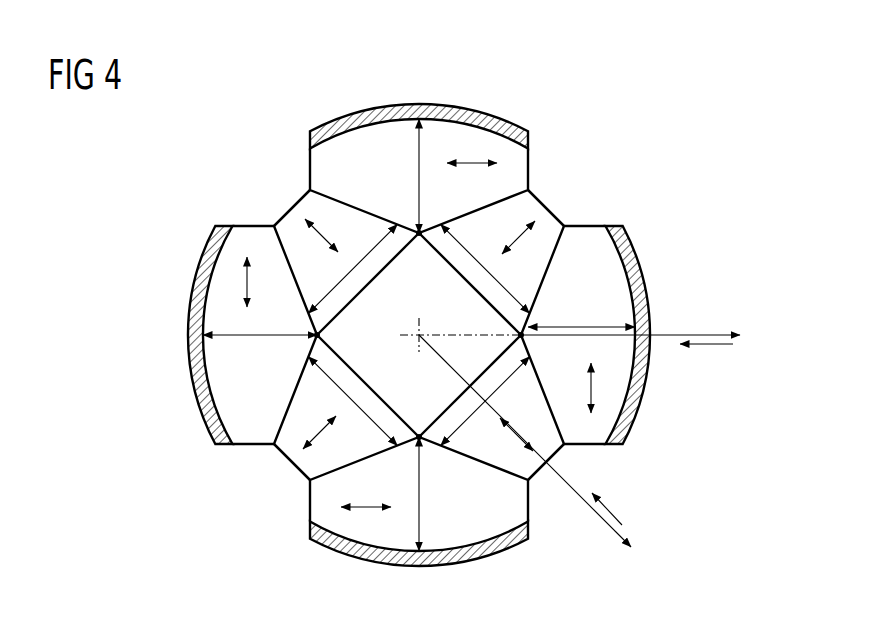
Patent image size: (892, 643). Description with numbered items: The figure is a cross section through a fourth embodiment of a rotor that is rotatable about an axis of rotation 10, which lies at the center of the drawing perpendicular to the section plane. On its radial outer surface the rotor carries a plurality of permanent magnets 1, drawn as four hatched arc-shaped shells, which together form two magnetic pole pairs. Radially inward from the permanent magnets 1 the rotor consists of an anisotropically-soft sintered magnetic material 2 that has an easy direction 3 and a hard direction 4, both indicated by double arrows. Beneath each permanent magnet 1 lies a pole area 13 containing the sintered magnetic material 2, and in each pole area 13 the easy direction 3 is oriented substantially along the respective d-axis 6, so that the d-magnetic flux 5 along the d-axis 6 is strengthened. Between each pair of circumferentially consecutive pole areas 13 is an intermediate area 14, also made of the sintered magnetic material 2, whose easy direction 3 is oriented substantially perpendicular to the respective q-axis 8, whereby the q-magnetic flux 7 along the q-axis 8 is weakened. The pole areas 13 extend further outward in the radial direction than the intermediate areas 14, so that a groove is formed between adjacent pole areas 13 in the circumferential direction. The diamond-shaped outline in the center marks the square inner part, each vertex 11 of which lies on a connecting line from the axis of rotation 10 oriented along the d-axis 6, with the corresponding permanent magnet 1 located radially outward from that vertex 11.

The permanent magnet 1 is at (470, 108).
The anisotropically-soft sintered magnetic material 2 is at (285, 450).
The easy direction 3 is at (368, 254).
The hard direction 4 is at (323, 238).
The d-magnetic flux 5 is at (712, 349).
The d-axis 6 is at (712, 330).
The q-magnetic flux 7 is at (613, 513).
The q-axis 8 is at (605, 527).
The axis of rotation 10 is at (412, 331).
The vertex 11 is at (419, 242).
The pole area 13 is at (247, 240).
The intermediate area 14 is at (308, 205).